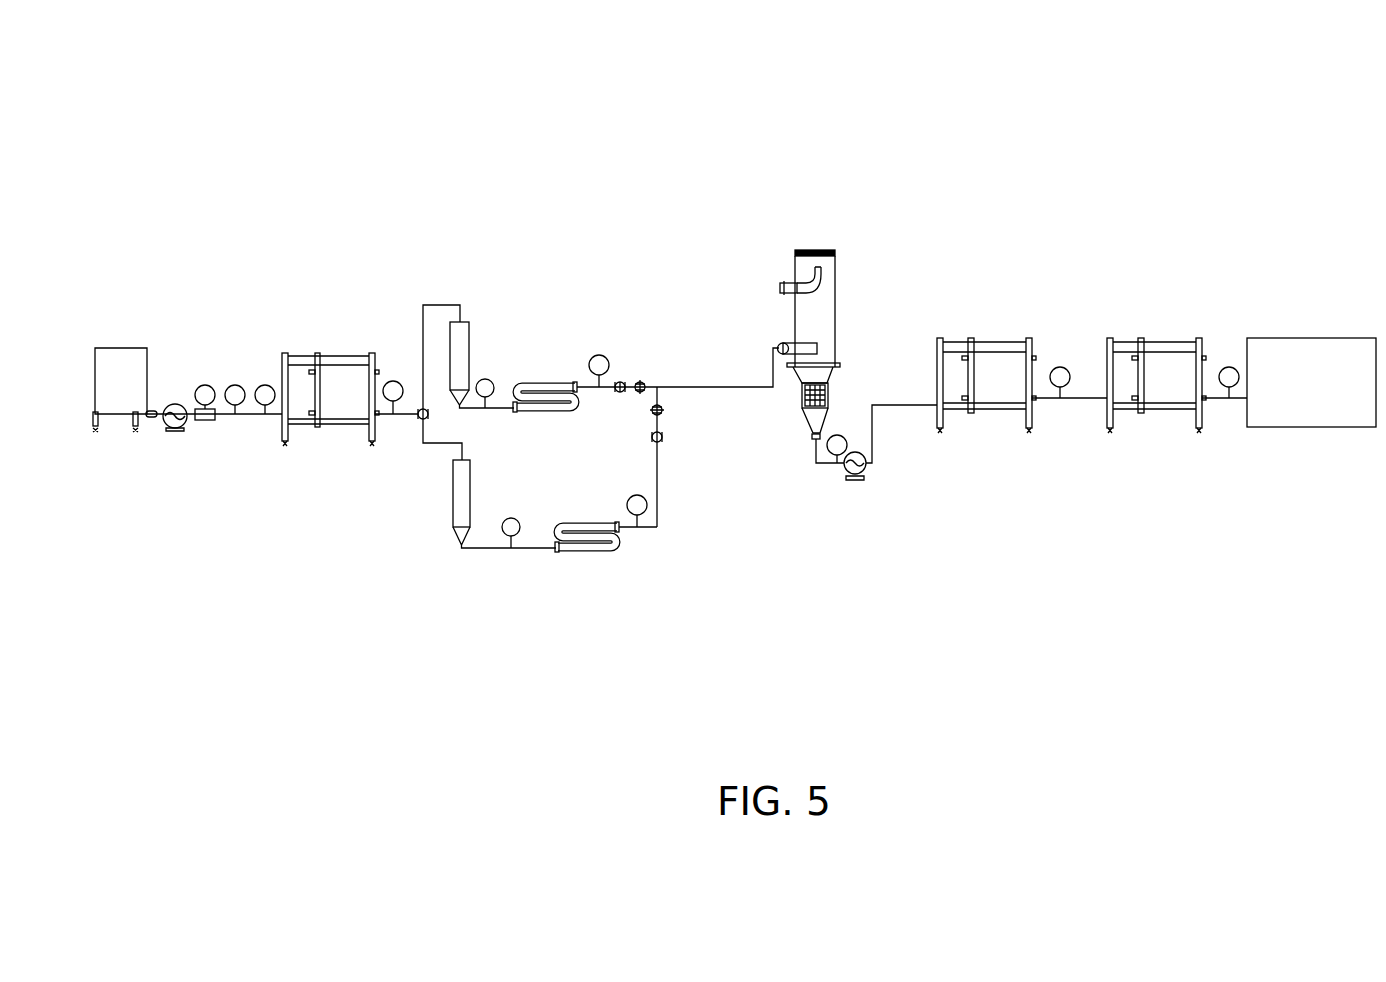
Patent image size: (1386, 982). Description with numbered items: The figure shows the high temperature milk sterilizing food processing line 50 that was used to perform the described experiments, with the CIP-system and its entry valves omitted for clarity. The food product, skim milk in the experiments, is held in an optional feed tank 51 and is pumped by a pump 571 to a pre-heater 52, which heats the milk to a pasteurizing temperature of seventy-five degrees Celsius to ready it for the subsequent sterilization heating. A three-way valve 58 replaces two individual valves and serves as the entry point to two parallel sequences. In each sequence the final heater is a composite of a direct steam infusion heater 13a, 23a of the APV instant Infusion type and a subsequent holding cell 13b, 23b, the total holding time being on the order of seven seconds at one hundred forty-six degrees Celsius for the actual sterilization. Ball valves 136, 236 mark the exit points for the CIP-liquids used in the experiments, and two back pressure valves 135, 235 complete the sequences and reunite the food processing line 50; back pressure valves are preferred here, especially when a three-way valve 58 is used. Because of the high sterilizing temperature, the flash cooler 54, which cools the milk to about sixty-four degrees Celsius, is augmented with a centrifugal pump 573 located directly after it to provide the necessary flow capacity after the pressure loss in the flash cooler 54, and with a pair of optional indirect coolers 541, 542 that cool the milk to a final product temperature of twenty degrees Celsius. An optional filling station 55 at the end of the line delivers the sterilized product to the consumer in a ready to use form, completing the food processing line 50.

The food processing line 50 is at (1200, 193).
The feed tank 51 is at (122, 338).
The pump 571 is at (176, 462).
The pre-heater 52 is at (328, 462).
The three-way valve 58 is at (418, 430).
The direct steam heater 23a is at (441, 245).
The holding cell 23b is at (548, 352).
The ball valve 236 is at (618, 318).
The back pressure valve 235 is at (655, 378).
The back pressure valve 135 is at (648, 424).
The ball valve 136 is at (667, 448).
The direct steam infusion heater 13a is at (461, 562).
The holding cell 13b is at (585, 562).
The flash cooler 54 is at (843, 278).
The centrifugal pump 573 is at (856, 545).
The indirect cooler 541 is at (987, 437).
The indirect cooler 542 is at (1154, 437).
The filling station 55 is at (1313, 437).